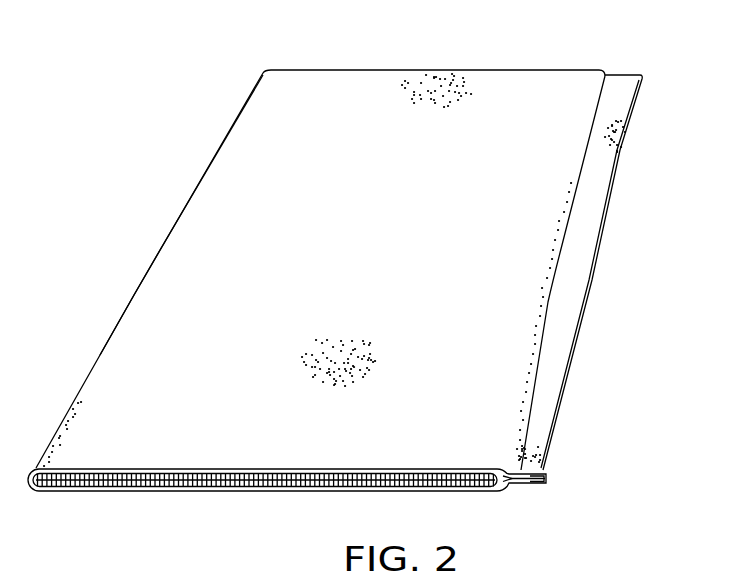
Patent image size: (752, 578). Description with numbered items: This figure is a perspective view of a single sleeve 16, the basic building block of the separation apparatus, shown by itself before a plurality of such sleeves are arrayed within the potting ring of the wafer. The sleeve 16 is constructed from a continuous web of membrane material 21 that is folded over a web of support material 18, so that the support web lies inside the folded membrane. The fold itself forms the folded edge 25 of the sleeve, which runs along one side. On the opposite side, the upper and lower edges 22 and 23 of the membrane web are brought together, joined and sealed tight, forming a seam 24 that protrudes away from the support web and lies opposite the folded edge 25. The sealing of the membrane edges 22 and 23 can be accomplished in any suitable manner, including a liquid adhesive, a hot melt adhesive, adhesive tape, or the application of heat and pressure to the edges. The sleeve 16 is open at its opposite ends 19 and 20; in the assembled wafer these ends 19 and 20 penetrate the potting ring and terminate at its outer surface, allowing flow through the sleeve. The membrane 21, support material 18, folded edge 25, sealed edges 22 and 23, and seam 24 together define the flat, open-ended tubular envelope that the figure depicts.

The sleeve 16 is at (98, 358).
The support material 18 is at (461, 484).
The end of sleeve 19 is at (302, 491).
The end of sleeve 20 is at (568, 68).
The membrane material 21 is at (136, 306).
The upper edge 22 is at (539, 483).
The lower edge 23 is at (524, 483).
The seam 24 is at (577, 295).
The folded edge 25 is at (167, 233).